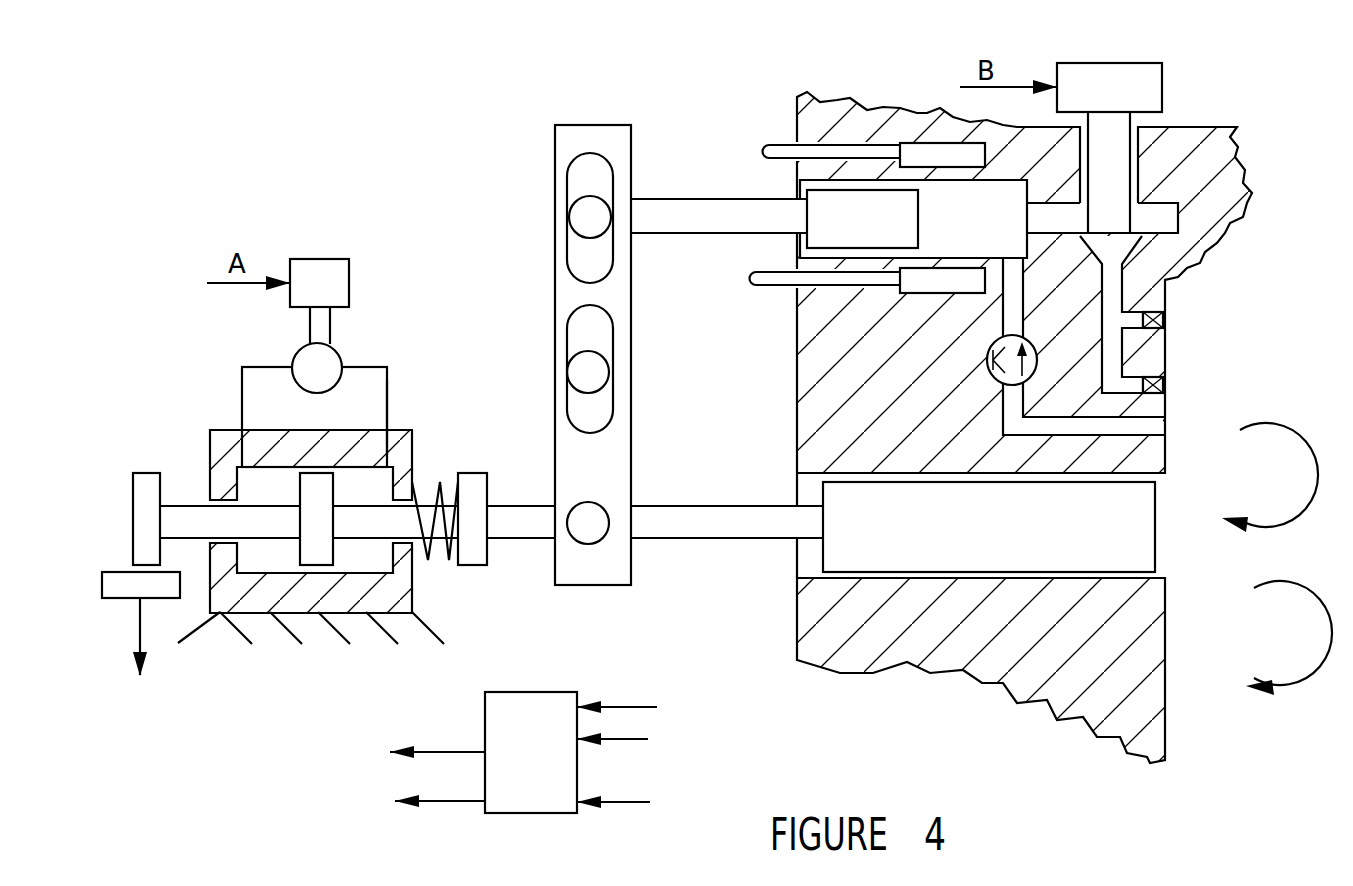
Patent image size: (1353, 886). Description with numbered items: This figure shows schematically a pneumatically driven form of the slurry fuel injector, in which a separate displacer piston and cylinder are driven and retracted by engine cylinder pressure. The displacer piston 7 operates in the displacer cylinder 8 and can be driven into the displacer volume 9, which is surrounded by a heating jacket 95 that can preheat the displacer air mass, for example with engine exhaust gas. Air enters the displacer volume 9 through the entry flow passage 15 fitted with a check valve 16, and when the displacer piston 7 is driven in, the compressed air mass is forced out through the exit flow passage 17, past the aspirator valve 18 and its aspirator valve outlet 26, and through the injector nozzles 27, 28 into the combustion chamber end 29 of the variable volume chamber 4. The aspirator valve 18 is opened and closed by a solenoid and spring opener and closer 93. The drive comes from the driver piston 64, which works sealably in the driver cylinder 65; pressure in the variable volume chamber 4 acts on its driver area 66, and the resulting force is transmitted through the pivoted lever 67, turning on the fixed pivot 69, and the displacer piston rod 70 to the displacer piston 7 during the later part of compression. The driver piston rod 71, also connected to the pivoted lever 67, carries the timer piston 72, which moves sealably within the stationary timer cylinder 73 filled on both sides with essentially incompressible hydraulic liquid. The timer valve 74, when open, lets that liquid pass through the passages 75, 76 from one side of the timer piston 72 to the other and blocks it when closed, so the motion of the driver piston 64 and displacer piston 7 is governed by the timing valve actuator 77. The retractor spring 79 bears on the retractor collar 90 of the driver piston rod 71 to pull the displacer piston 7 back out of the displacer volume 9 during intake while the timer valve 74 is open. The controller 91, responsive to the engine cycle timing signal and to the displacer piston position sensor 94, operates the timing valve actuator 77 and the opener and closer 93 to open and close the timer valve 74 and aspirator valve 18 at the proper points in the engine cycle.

The variable volume chamber 4 is at (1270, 477).
The displacer piston 7 is at (872, 202).
The displacer cylinder 8 is at (840, 252).
The displacer volume 9 is at (970, 205).
The entry flow passage 15 is at (1137, 427).
The check valve 16 is at (987, 355).
The exit flow passage 17 is at (1062, 223).
The aspirator valve 18 is at (1105, 183).
The aspirator valve outlet 26 is at (1107, 290).
The injector nozzle 27 is at (1165, 314).
The injector nozzle 28 is at (1165, 380).
The combustion chamber end 29 is at (1289, 638).
The driver piston 64 is at (935, 553).
The driver cylinder 65 is at (993, 583).
The driver area 66 is at (1160, 540).
The pivoted lever 67 is at (567, 280).
The fixed pivot 69 is at (583, 375).
The displacer piston rod 70 is at (723, 210).
The driver piston rod 71 is at (770, 528).
The timer piston 72 is at (322, 553).
The timer cylinder 73 is at (350, 590).
The timer valve 74 is at (300, 347).
The passage 75 is at (243, 383).
The passage 76 is at (390, 397).
The timing valve actuator 77 is at (308, 277).
The retractor spring 79 is at (441, 470).
The retractor collar 90 is at (472, 562).
The controller 91 is at (550, 778).
The solenoid and spring opener and closer 93 is at (1115, 93).
The displacer piston position sensor 94 is at (118, 583).
The heating jacket 95 is at (967, 157).